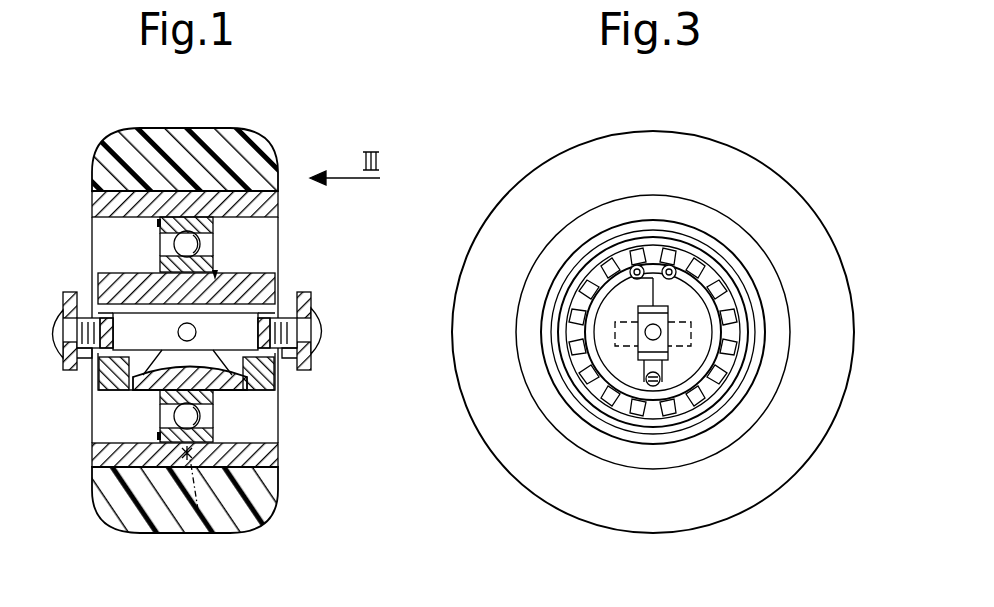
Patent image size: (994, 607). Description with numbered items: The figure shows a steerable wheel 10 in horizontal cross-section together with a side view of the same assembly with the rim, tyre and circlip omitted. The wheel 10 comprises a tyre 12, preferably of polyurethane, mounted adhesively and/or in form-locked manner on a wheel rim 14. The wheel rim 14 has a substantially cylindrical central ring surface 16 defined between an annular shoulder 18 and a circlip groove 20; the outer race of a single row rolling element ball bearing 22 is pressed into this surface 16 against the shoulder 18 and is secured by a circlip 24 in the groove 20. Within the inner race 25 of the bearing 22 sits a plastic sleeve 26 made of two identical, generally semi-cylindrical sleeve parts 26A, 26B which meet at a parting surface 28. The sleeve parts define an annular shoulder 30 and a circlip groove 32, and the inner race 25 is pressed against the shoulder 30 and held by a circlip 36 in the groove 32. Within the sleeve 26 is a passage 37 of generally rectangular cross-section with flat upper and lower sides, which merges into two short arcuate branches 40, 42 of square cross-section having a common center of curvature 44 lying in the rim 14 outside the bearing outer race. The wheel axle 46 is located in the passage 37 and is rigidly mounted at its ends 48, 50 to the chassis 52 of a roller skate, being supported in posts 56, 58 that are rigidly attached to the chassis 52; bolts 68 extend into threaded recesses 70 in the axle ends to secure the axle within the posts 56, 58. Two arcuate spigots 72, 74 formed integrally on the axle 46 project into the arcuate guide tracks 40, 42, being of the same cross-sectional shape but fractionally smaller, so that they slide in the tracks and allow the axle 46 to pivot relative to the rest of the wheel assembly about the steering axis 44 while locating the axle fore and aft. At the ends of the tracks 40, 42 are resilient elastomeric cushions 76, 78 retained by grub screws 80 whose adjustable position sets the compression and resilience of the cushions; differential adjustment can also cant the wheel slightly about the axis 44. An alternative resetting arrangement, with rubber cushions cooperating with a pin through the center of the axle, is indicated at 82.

In FIG. 1, the wheel 10 is at (246, 124).
In FIG. 3, the wheel 10 is at (766, 156).
In FIG. 1, the tyre 12 is at (258, 165).
In FIG. 3, the tyre 12 is at (612, 152).
In FIG. 1, the wheel rim 14 is at (98, 203).
In FIG. 3, the wheel rim 14 is at (535, 378).
In FIG. 1, the central ring surface 16 is at (178, 225).
In FIG. 1, the annular shoulder 18 is at (216, 222).
In FIG. 1, the circlip groove 20 is at (156, 222).
In FIG. 1, the single row rolling element ball bearing 22 is at (197, 230).
In FIG. 3, the single row rolling element ball bearing 22 is at (600, 247).
In FIG. 1, the circlip 24 is at (148, 195).
In FIG. 1, the inner race 25 is at (172, 395).
In FIG. 3, the inner race 25 is at (603, 280).
In FIG. 1, the plastic sleeve 26 is at (282, 285).
In FIG. 1, the sleeve part 26A is at (288, 365).
In FIG. 3, the sleeve part 26A is at (683, 293).
In FIG. 3, the sleeve part 26B is at (606, 312).
In FIG. 1, the parting surface 28 is at (113, 270).
In FIG. 3, the parting surface 28 is at (607, 305).
In FIG. 1, the annular shoulder 30 is at (156, 388).
In FIG. 1, the circlip groove 32 is at (235, 485).
In FIG. 1, the circlip 36 is at (215, 276).
In FIG. 3, the circlip 36 is at (612, 327).
In FIG. 1, the passage 37 is at (300, 310).
In FIG. 3, the passage 37 is at (660, 312).
In FIG. 1, the arcuate branch 40 is at (92, 467).
In FIG. 1, the arcuate branch 42 is at (255, 435).
In FIG. 1, the center of curvature 44 is at (198, 510).
In FIG. 1, the wheel axle 46 is at (76, 292).
In FIG. 3, the wheel axle 46 is at (663, 345).
In FIG. 1, the axle end 48 is at (282, 370).
In FIG. 3, the axle end 48 is at (722, 415).
In FIG. 1, the axle end 50 is at (54, 352).
In FIG. 1, the chassis 52 is at (65, 300).
In FIG. 1, the post 56 is at (62, 366).
In FIG. 1, the post 58 is at (303, 362).
In FIG. 1, the bolt 68 is at (50, 322).
In FIG. 1, the threaded recess 70 is at (262, 332).
In FIG. 1, the arcuate spigot 72 is at (158, 390).
In FIG. 1, the arcuate spigot 74 is at (240, 360).
In FIG. 3, the arcuate spigot 74 is at (640, 385).
In FIG. 1, the resilient elastomeric cushion 76 is at (102, 366).
In FIG. 1, the resilient elastomeric cushion 78 is at (250, 388).
In FIG. 1, the grub screw 80 is at (102, 385).
In FIG. 3, the grub screw 80 is at (646, 385).
In FIG. 1, the pin 82 is at (182, 327).
In FIG. 3, the pin 82 is at (690, 332).